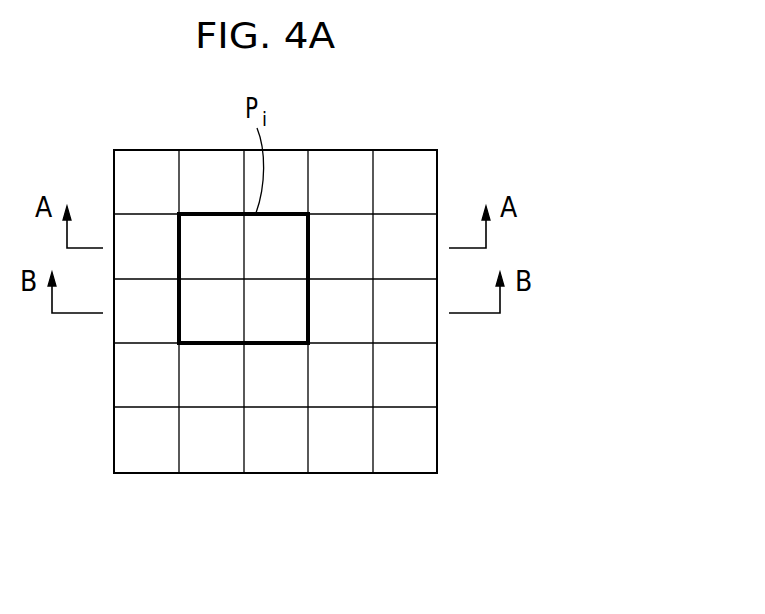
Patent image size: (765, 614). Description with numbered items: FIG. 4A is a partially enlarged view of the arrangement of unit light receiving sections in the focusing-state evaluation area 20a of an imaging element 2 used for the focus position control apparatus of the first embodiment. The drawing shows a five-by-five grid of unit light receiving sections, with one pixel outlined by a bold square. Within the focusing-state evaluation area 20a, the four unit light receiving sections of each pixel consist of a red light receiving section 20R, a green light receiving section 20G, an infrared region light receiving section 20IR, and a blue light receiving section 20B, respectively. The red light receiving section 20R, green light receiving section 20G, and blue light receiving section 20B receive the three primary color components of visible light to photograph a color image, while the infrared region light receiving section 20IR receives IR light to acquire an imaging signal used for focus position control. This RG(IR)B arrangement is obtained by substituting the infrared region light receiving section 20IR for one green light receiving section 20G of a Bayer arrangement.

The imaging element 2 is at (522, 112).
The focusing-state evaluation area 20a is at (538, 178).
The red light receiving section 20R is at (192, 237).
The green light receiving section 20G is at (292, 240).
The infrared region light receiving section 20IR is at (198, 326).
The blue light receiving section 20B is at (292, 328).